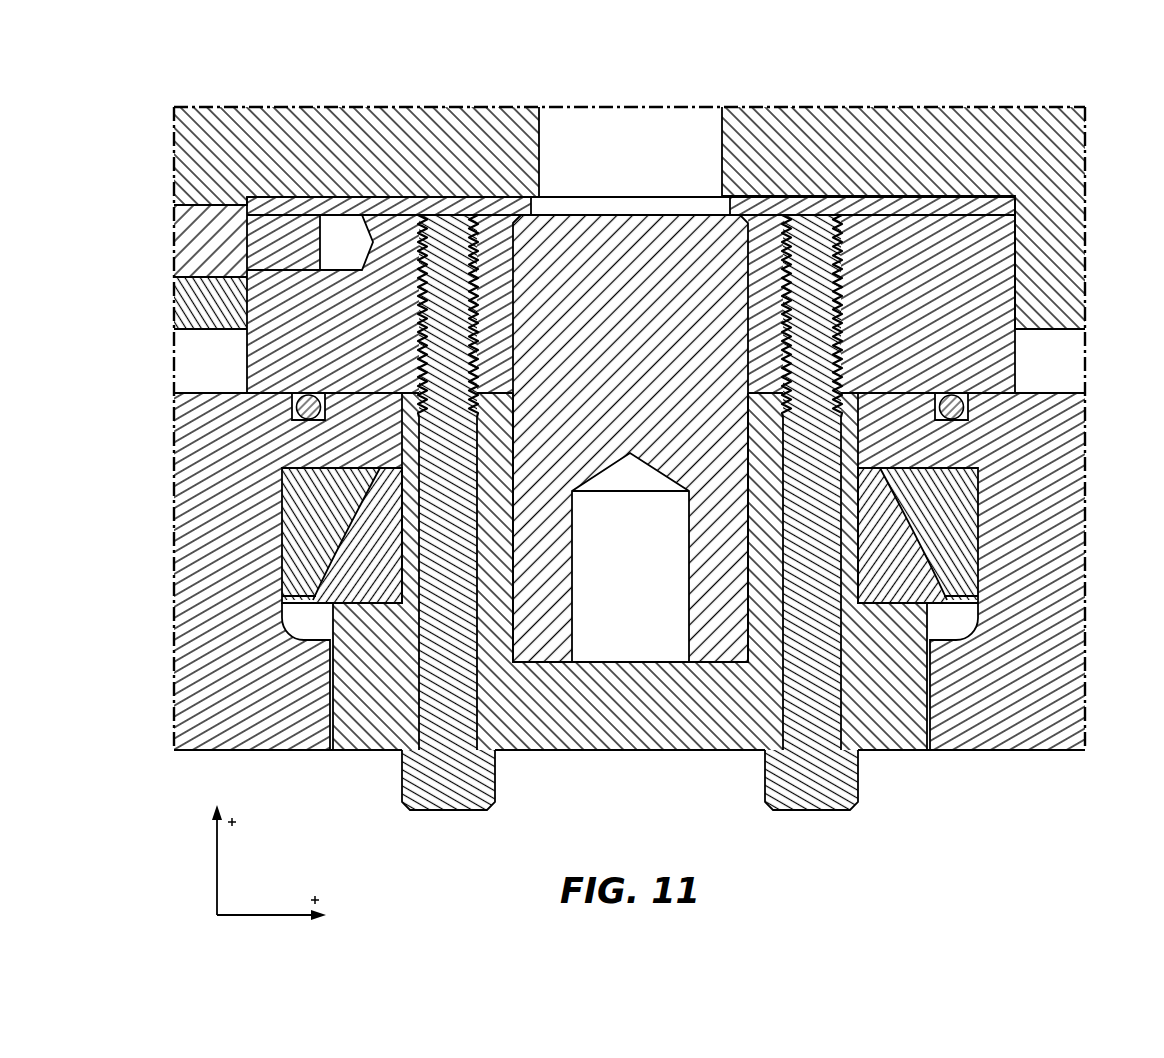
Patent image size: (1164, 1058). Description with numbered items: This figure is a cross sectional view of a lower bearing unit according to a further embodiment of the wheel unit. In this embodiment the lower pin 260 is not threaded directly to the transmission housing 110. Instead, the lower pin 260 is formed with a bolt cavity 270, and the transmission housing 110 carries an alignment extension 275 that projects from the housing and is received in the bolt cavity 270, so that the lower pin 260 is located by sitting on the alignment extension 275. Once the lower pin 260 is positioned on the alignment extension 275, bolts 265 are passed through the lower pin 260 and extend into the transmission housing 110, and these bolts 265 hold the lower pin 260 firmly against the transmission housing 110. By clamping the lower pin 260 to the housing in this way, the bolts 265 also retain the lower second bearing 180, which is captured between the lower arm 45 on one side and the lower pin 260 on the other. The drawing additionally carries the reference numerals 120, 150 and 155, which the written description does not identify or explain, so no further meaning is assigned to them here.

The lower arm 45 is at (215, 490).
The transmission housing 110 is at (398, 128).
The clamping assembly 120 is at (620, 453).
The horizontal axis 150 is at (268, 913).
The vertical axis 155 is at (218, 853).
The lower second bearing 180 is at (350, 563).
The lower pin 260 is at (537, 716).
The bolts 265 is at (452, 785).
The bolt cavity 270 is at (513, 582).
The alignment extension 275 is at (627, 344).